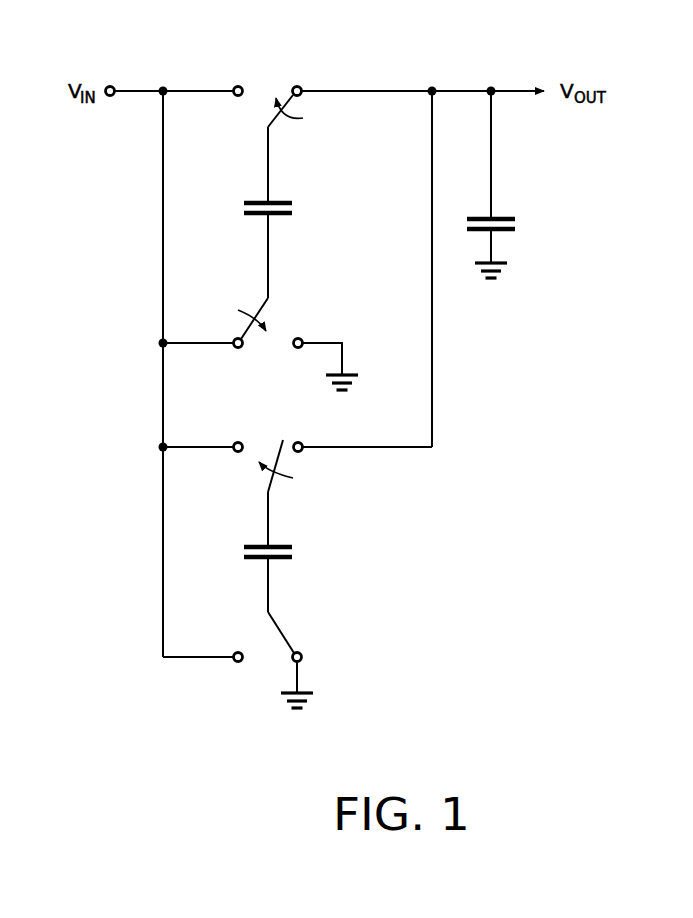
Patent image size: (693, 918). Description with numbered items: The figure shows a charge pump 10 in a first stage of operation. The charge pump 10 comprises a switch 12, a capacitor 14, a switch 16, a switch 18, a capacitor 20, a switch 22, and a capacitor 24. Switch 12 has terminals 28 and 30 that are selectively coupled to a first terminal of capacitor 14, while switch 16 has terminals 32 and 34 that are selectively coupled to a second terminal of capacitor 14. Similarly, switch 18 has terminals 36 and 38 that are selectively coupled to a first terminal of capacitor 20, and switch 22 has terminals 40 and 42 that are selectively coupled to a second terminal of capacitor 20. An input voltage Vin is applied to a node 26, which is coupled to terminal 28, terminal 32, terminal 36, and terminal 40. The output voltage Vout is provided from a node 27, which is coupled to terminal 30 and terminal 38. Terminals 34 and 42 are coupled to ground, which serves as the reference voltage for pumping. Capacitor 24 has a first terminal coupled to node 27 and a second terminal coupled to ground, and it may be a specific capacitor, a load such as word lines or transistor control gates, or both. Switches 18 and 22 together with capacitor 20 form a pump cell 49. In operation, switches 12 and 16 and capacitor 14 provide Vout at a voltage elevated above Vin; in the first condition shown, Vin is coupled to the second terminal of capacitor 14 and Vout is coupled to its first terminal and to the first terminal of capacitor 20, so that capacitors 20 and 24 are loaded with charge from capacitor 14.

The charge pump 10 is at (447, 752).
The switch 12 is at (245, 108).
The capacitor 14 is at (284, 201).
The switch 16 is at (294, 319).
The switch 18 is at (238, 475).
The capacitor 20 is at (285, 545).
The switch 22 is at (252, 630).
The capacitor 24 is at (504, 217).
The node 26 is at (163, 87).
The node 27 is at (432, 85).
The terminal 28 is at (238, 85).
The terminal 30 is at (297, 85).
The terminal 32 is at (238, 337).
The terminal 34 is at (298, 349).
The terminal 36 is at (238, 441).
The terminal 38 is at (298, 441).
The terminal 40 is at (238, 664).
The terminal 42 is at (297, 651).
The pump cell 49 is at (361, 502).